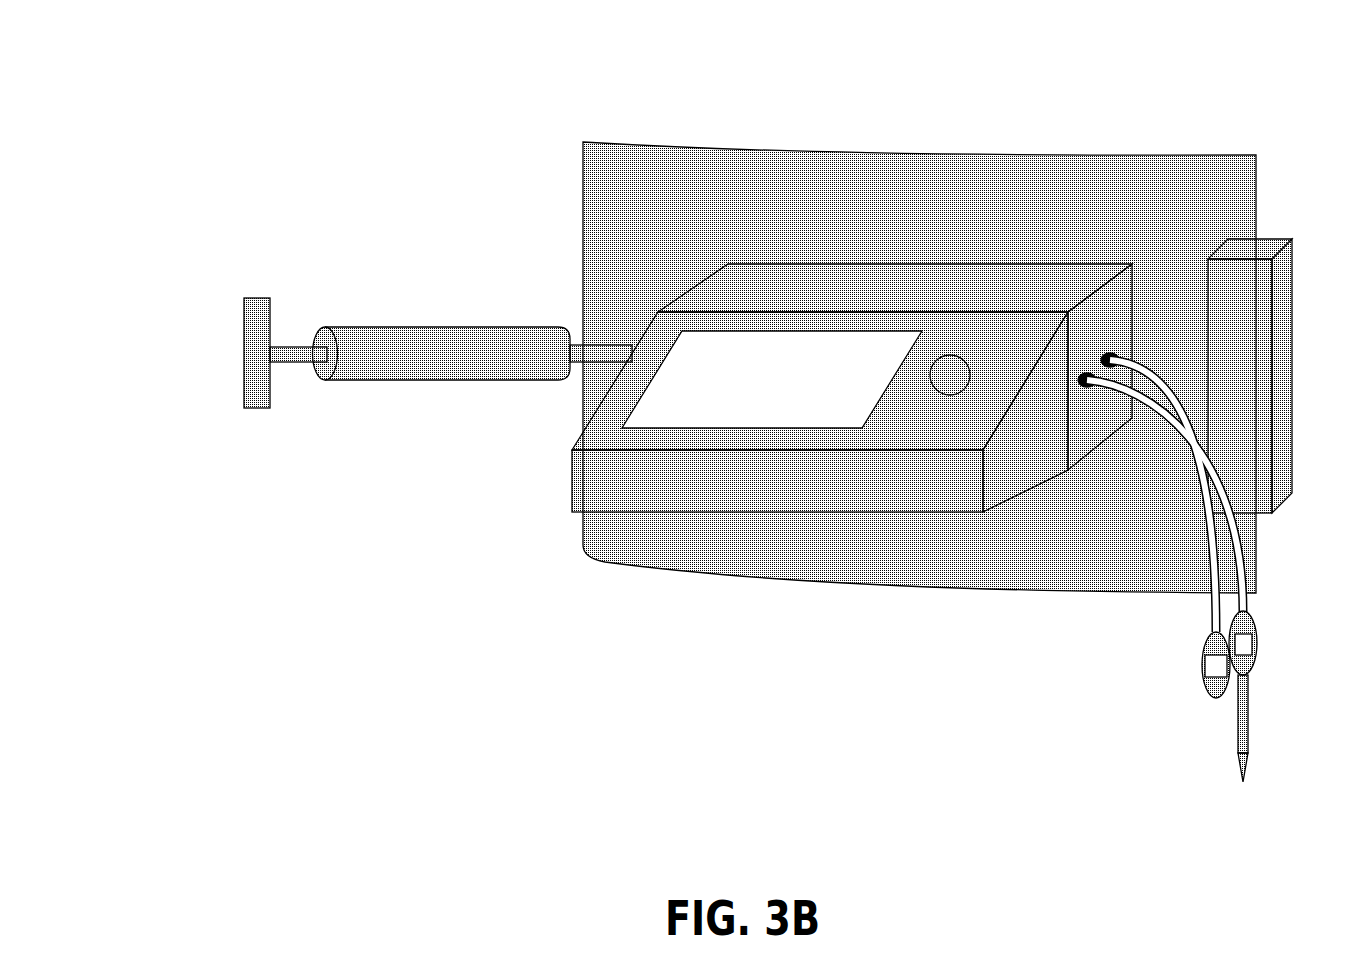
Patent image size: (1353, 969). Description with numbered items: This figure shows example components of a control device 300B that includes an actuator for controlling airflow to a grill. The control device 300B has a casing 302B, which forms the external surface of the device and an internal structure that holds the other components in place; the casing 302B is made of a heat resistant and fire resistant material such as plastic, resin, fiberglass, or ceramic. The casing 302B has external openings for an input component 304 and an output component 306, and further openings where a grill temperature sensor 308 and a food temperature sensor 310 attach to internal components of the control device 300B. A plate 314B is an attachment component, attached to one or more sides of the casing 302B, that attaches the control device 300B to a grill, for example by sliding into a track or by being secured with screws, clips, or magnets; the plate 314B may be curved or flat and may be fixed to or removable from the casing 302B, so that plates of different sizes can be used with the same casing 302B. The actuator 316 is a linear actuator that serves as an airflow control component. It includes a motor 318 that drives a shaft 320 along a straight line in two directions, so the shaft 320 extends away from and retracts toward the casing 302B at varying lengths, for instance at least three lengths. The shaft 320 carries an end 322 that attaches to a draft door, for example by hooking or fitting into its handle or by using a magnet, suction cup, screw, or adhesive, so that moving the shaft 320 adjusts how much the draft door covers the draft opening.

The control device 300B is at (234, 36).
The casing 302B is at (795, 277).
The input component 304 is at (950, 355).
The output component 306 is at (723, 428).
The grill temperature sensor 308 is at (1202, 664).
The food temperature sensor 310 is at (1255, 643).
The plate 314B is at (917, 155).
The actuator 316 is at (397, 367).
The motor 318 is at (432, 327).
The shaft 320 is at (297, 347).
The end 322 is at (244, 322).